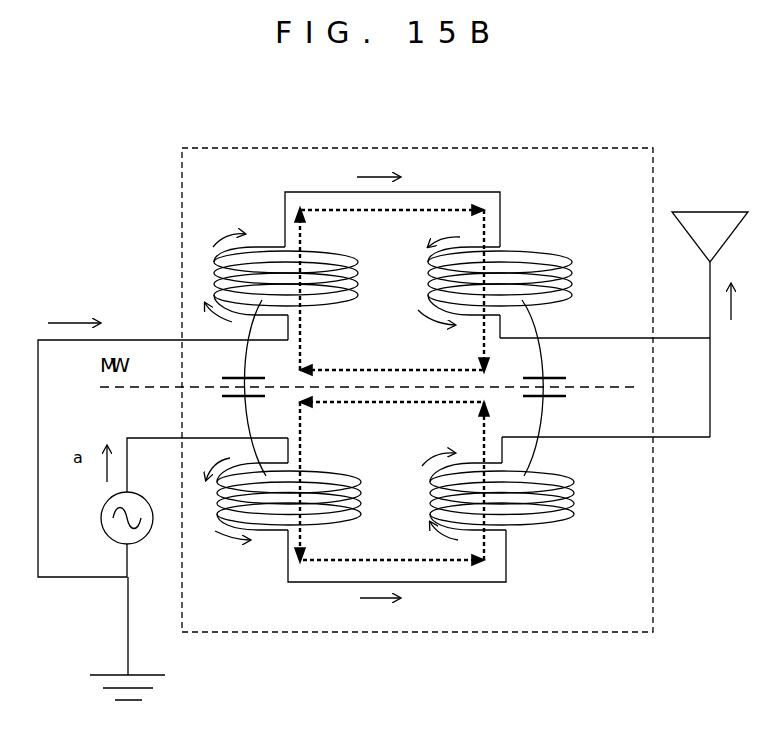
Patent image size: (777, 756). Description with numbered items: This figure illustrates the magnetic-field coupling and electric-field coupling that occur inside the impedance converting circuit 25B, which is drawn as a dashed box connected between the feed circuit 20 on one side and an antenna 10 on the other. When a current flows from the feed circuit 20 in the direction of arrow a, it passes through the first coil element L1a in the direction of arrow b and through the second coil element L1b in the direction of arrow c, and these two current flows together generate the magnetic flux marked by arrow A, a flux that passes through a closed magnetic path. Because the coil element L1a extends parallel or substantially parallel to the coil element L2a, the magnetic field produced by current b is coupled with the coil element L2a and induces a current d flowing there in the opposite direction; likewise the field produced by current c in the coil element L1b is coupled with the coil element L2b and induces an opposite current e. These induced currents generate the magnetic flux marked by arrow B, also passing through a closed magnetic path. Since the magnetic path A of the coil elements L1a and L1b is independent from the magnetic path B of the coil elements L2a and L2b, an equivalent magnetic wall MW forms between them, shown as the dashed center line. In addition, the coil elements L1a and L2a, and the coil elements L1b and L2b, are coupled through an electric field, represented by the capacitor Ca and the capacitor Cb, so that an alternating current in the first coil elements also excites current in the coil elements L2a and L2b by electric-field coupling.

The antenna 10 is at (710, 212).
The feed circuit 20 is at (101, 518).
The impedance converting circuit 25B is at (418, 148).
The first coil element L1a is at (304, 499).
The second coil element L1b is at (519, 496).
The coil element L2a is at (303, 278).
The coil element L2b is at (516, 281).
The capacitor Ca is at (229, 388).
The capacitor Cb is at (560, 388).